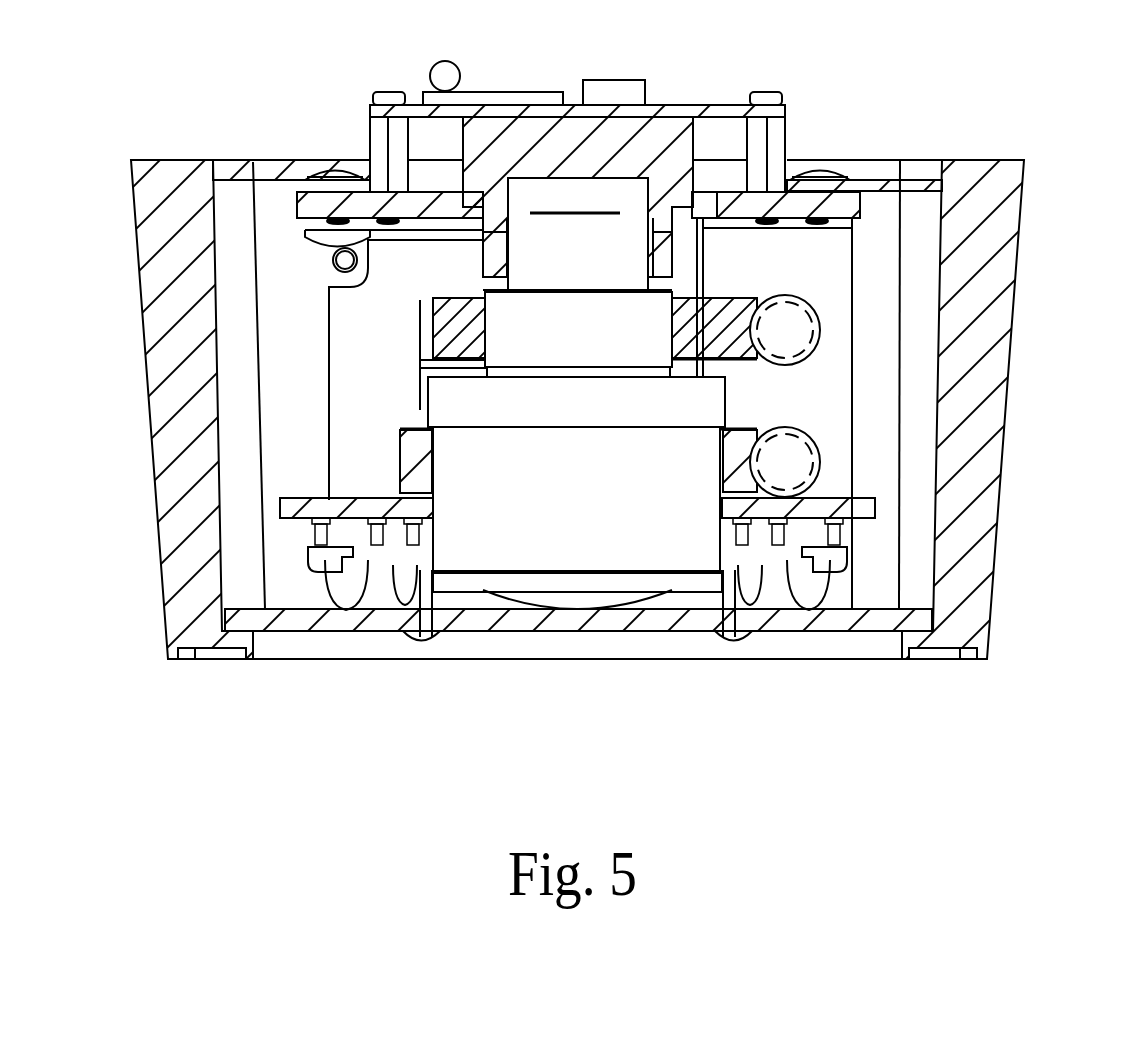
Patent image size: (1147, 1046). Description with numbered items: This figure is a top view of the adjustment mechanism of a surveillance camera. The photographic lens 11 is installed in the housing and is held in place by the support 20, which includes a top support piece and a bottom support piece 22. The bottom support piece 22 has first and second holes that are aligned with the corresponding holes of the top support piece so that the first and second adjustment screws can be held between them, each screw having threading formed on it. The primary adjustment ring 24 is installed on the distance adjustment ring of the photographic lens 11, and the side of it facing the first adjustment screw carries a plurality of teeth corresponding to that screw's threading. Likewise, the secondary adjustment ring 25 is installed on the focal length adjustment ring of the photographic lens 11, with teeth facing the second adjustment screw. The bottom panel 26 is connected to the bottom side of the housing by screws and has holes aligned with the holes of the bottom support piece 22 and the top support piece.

The photographic lens 11 is at (587, 545).
The support 20 is at (356, 205).
The bottom support piece 22 is at (360, 397).
The primary adjustment ring 24 is at (747, 427).
The secondary adjustment ring 25 is at (717, 340).
The bottom panel 26 is at (825, 263).